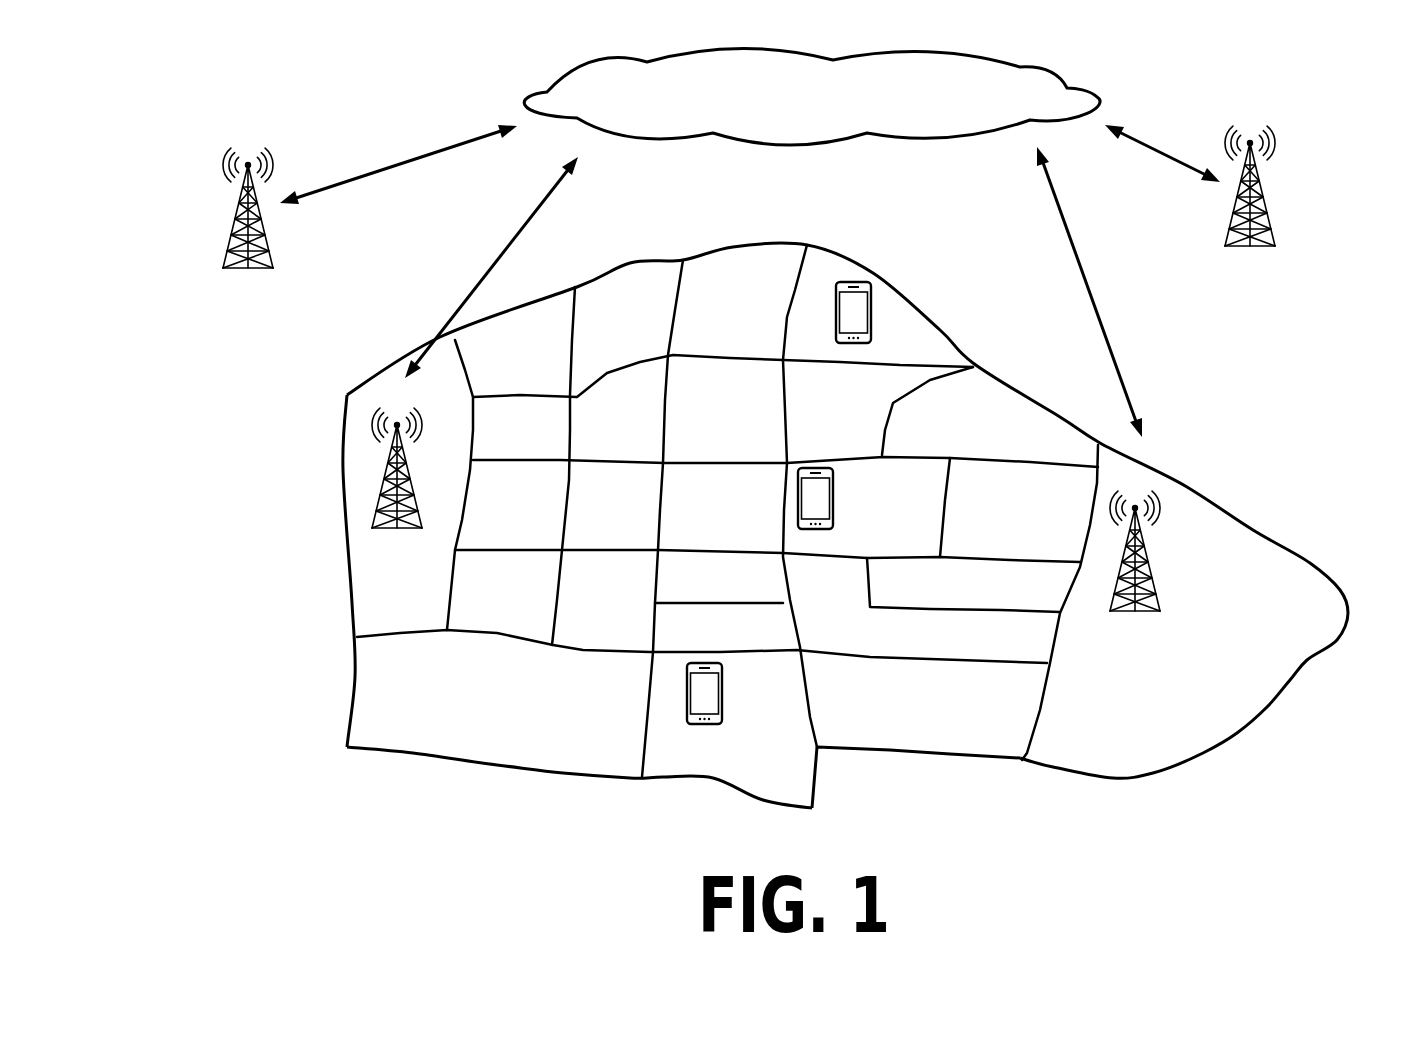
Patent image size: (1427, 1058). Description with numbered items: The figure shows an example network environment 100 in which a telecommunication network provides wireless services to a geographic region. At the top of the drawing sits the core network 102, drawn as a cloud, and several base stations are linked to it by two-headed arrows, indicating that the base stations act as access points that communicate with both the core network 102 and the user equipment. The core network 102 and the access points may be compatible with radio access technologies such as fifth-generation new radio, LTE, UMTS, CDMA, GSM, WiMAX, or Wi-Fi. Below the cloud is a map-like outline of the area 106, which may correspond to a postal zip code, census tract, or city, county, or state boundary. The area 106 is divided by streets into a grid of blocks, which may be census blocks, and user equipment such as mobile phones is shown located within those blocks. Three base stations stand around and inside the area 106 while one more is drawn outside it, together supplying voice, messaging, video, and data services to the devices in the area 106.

The network environment 100 is at (116, 46).
The core network 102 is at (790, 122).
The area 106 is at (1267, 707).